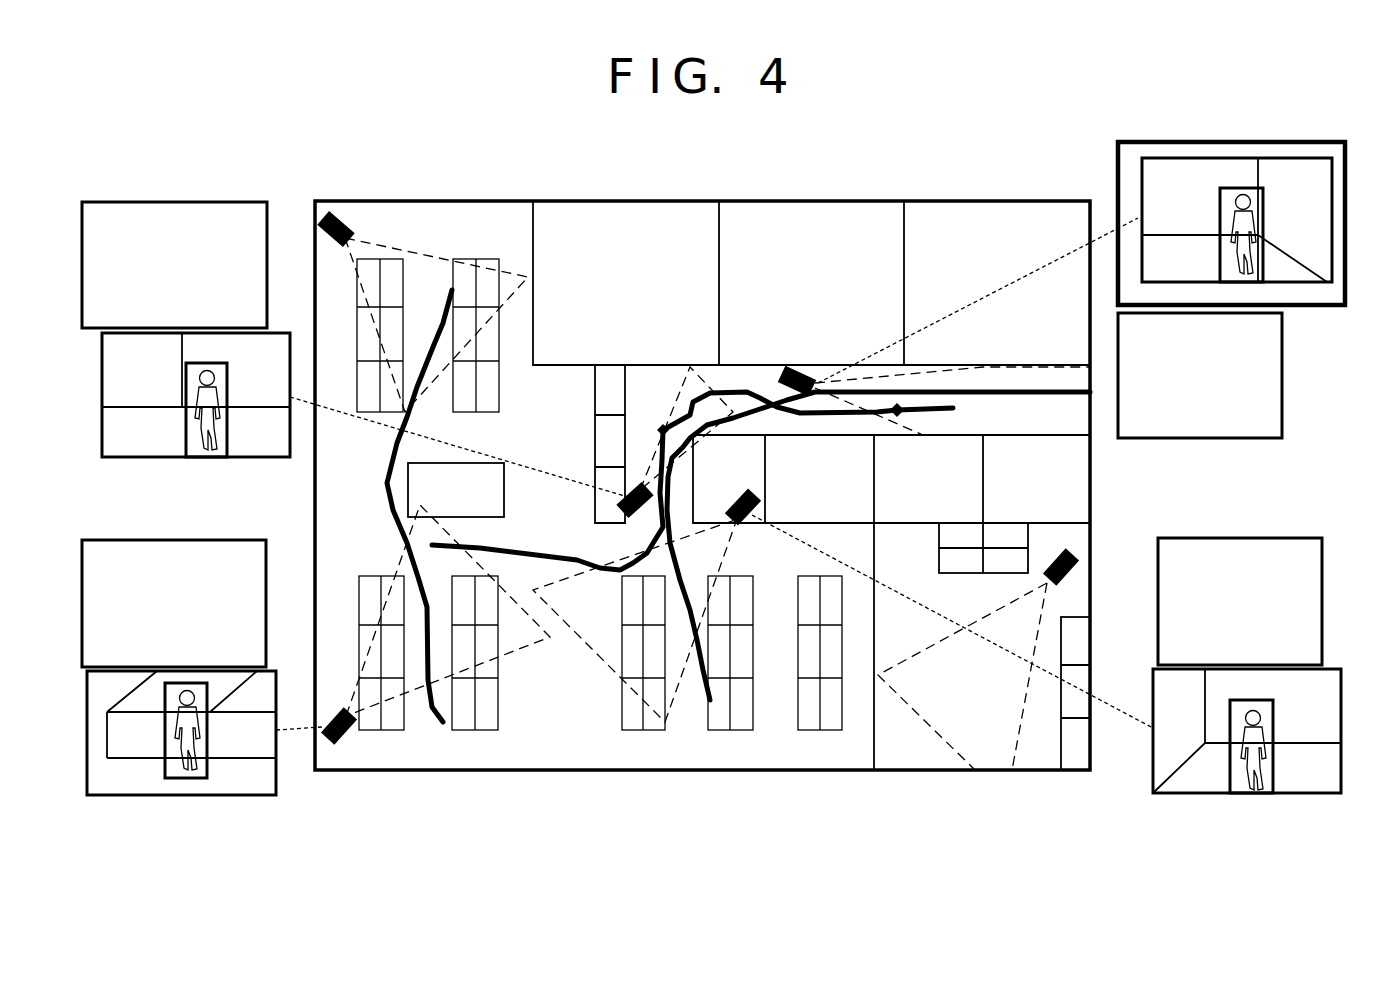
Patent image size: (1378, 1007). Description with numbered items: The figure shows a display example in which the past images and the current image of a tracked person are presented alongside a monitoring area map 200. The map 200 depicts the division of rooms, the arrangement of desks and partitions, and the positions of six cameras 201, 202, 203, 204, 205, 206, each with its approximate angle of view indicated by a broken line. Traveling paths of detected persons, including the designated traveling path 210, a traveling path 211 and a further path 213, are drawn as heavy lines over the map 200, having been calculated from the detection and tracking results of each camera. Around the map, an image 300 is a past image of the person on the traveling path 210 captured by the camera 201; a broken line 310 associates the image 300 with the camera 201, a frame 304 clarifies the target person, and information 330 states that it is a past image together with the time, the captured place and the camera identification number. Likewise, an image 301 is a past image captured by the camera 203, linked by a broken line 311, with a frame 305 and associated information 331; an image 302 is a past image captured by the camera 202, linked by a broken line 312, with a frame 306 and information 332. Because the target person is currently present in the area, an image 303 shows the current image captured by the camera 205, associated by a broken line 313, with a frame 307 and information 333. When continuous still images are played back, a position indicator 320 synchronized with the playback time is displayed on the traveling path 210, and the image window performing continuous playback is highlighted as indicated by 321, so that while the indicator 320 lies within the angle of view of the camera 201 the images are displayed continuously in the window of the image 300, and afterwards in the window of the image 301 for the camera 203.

The map 200 is at (1040, 201).
The camera 201 is at (778, 383).
The camera 202 is at (736, 496).
The camera 203 is at (628, 519).
The camera 204 is at (1078, 557).
The camera 205 is at (346, 744).
The camera 206 is at (351, 229).
The traveling path 210 is at (954, 411).
The traveling path 211 is at (680, 573).
The movement trajectory of another person 213 is at (385, 485).
The image 300 is at (1231, 201).
The image 301 is at (196, 422).
The image 302 is at (1247, 758).
The image 303 is at (181, 760).
The frame 304 is at (1218, 197).
The frame 305 is at (183, 438).
The frame 306 is at (1232, 764).
The frame 307 is at (162, 766).
The broken line 310 is at (990, 291).
The broken line 311 is at (536, 465).
The broken line 312 is at (1121, 688).
The broken line 313 is at (290, 732).
The position indicator 320 is at (900, 414).
The highlighted image window 321 is at (1318, 142).
The information 330 is at (1282, 366).
The information 331 is at (211, 202).
The information 332 is at (1312, 538).
The information 333 is at (170, 540).